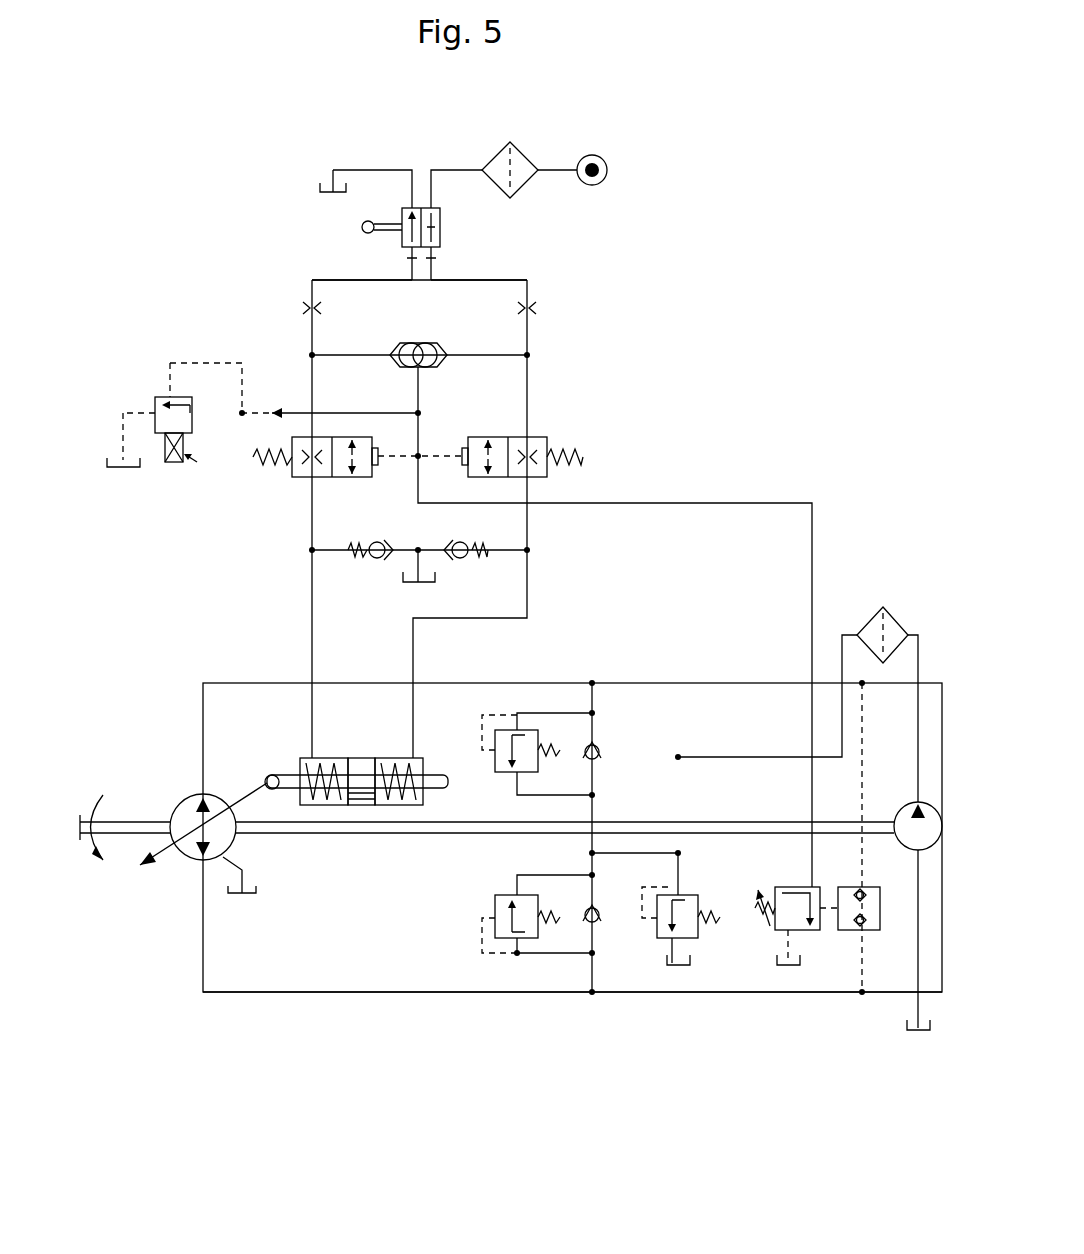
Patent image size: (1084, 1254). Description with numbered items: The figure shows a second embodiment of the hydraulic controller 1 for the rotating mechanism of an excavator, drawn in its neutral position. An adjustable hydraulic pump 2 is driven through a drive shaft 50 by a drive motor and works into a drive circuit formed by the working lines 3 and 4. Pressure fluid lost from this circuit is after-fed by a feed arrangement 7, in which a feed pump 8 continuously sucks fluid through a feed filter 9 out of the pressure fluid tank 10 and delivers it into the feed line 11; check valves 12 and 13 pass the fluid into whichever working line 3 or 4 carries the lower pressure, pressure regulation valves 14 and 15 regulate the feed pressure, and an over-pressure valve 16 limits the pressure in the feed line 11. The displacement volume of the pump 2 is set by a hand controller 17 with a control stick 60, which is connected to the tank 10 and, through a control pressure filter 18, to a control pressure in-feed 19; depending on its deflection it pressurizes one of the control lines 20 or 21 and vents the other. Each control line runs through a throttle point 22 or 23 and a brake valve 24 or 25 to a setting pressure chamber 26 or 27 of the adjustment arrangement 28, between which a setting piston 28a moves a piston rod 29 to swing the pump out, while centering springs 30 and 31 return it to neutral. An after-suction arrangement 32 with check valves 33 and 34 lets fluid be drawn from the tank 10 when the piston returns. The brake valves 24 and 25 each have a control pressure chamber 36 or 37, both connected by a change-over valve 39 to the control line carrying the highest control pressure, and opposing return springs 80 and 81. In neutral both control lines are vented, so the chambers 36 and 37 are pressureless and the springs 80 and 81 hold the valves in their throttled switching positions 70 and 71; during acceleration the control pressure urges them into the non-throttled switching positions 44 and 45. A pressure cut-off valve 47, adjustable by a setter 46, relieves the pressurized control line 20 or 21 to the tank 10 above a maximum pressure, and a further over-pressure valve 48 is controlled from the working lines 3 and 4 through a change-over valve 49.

The controller 1 is at (719, 404).
The adjustable hydraulic pump 2 is at (233, 847).
The working line 3 is at (631, 683).
The working line 4 is at (740, 992).
The feed arrangement 7 is at (632, 780).
The feed pump 8 is at (928, 846).
The feed filter 9 is at (899, 622).
The pressure fluid tank 10 is at (315, 191).
The feed line 11 is at (712, 757).
The check valve 12 is at (598, 926).
The check valve 13 is at (598, 746).
The pressure regulation valve 14 is at (500, 770).
The pressure regulation valve 15 is at (495, 912).
The over-pressure valve 16 is at (698, 900).
The hand controller 17 is at (440, 225).
The control pressure filter 18 is at (517, 185).
The control pressure in-feed 19 is at (600, 185).
The control line 20 is at (349, 280).
The control line 21 is at (470, 280).
The throttle point 22 is at (303, 307).
The throttle point 23 is at (535, 307).
The brake valve 24 is at (301, 460).
The brake valve 25 is at (522, 461).
The setting pressure chamber 26 is at (325, 758).
The setting pressure chamber 27 is at (390, 758).
The adjustment arrangement 28 is at (301, 758).
The setting piston 28a is at (361, 781).
The piston rod 29 is at (270, 776).
The centering spring 30 is at (420, 760).
The centering spring 31 is at (308, 758).
The after-suction arrangement 32 is at (420, 559).
The check valve 33 is at (463, 558).
The check valve 34 is at (372, 558).
The control pressure chamber 36 is at (376, 466).
The control pressure chamber 37 is at (463, 448).
The change-over valve 39 is at (410, 345).
The non-throttled switching position 44 is at (352, 437).
The non-throttled switching position 45 is at (488, 437).
The setter 46 is at (174, 465).
The pressure cut-off valve 47 is at (157, 406).
The over-pressure valve 48 is at (800, 932).
The change-over valve 49 is at (872, 932).
The drive shaft 50 is at (121, 822).
The control stick 60 is at (388, 226).
The throttled switching position 70 is at (318, 437).
The throttled switching position 71 is at (530, 437).
The return spring 80 is at (253, 457).
The return spring 81 is at (565, 447).